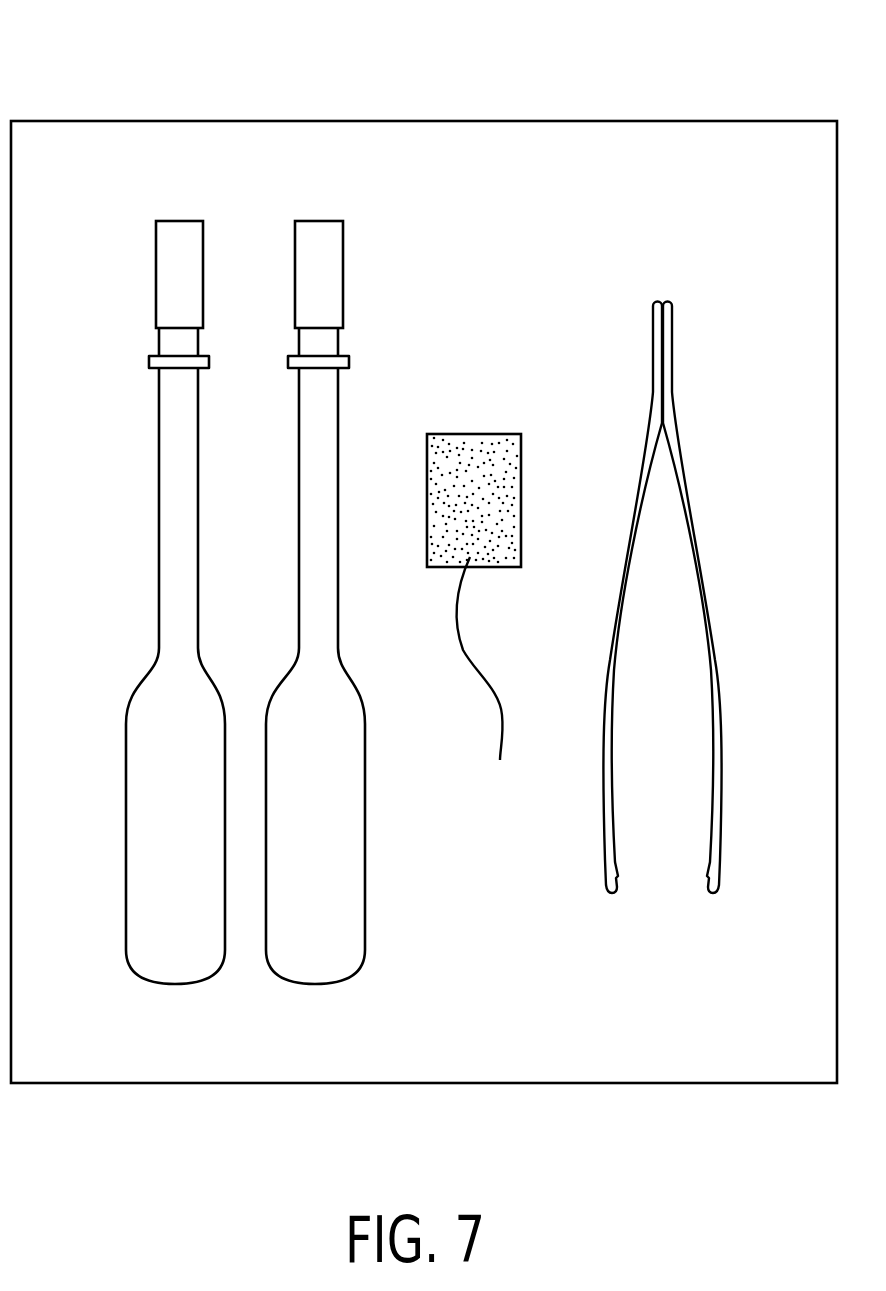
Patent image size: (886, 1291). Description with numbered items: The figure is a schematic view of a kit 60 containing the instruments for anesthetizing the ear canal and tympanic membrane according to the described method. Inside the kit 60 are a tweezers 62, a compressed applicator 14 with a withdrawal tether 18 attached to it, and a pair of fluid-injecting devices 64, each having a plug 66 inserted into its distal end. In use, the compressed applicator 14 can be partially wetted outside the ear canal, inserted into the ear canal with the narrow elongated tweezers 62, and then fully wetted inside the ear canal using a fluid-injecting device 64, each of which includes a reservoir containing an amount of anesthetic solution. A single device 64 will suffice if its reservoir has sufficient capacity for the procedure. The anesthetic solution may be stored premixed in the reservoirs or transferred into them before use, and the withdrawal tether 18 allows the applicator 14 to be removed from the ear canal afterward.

The kit 60 is at (90, 120).
The plug 66 is at (156, 270).
The fluid-injecting device 64 is at (126, 903).
The compressed applicator 14 is at (494, 434).
The withdrawal tether 18 is at (488, 683).
The tweezers 62 is at (695, 558).